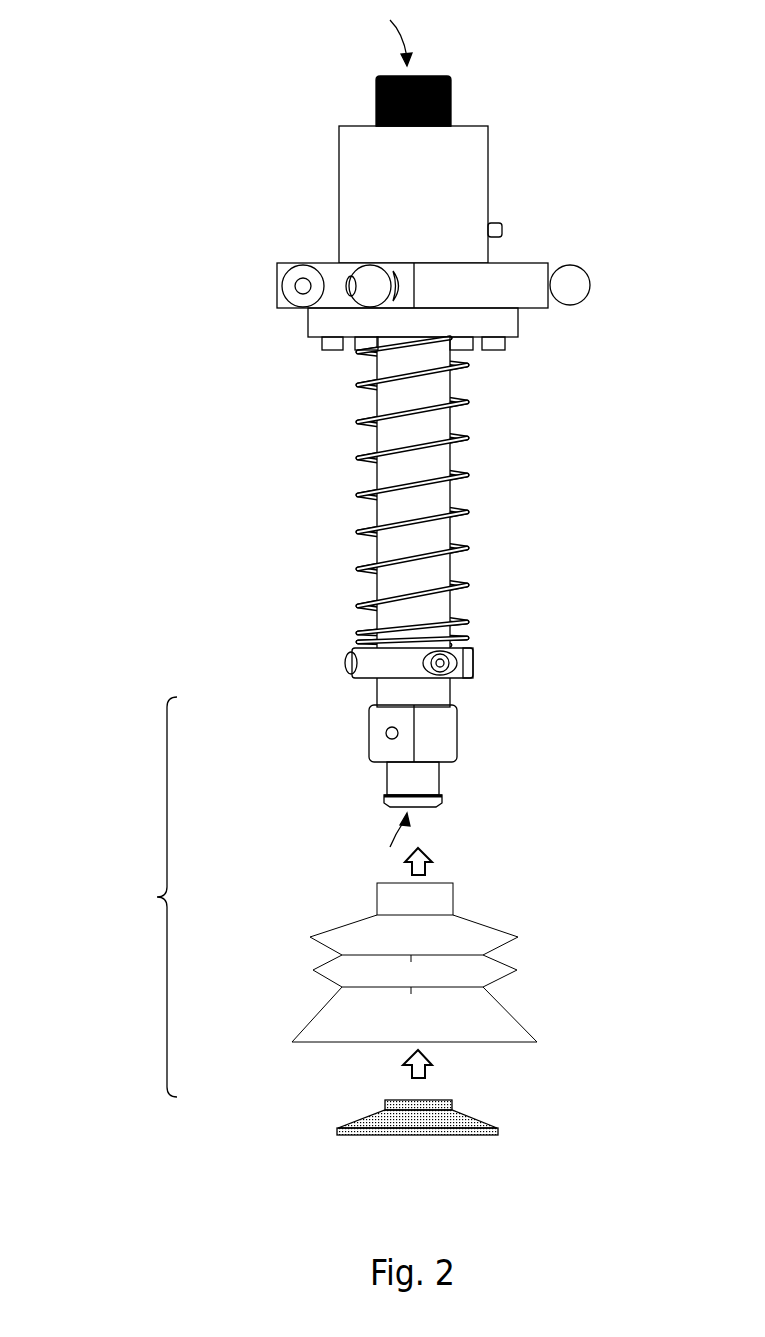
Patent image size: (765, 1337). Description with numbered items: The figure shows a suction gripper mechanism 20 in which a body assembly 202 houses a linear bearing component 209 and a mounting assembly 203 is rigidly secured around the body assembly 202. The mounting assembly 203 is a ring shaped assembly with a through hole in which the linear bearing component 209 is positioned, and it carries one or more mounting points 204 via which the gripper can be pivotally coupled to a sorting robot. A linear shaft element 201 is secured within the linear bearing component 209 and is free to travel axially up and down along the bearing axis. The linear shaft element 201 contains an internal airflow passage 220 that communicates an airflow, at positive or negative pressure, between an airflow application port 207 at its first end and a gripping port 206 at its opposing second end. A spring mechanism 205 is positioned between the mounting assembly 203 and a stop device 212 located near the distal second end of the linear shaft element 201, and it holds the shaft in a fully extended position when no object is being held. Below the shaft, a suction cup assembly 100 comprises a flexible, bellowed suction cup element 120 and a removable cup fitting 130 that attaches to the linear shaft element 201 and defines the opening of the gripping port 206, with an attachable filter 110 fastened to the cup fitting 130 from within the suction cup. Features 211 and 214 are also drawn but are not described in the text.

The suction gripper mechanism 20 is at (122, 226).
The suction cup assembly 100 is at (332, 916).
The attachable filter 110 is at (333, 1128).
The bellowed suction cup element 120 is at (313, 972).
The cup fitting 130 is at (457, 732).
The linear shaft element 201 is at (380, 512).
The body assembly 202 is at (352, 195).
The mounting assembly 203 is at (537, 262).
The mounting points 204 is at (307, 278).
The spring mechanism 205 is at (360, 457).
The gripping port 206 is at (383, 797).
The airflow application port 207 is at (453, 108).
The linear bearing component 209 is at (359, 110).
The end flange 211 is at (442, 797).
The stop device 212 is at (473, 665).
The pin 214 is at (492, 222).
The internal airflow passage 220 is at (372, 436).